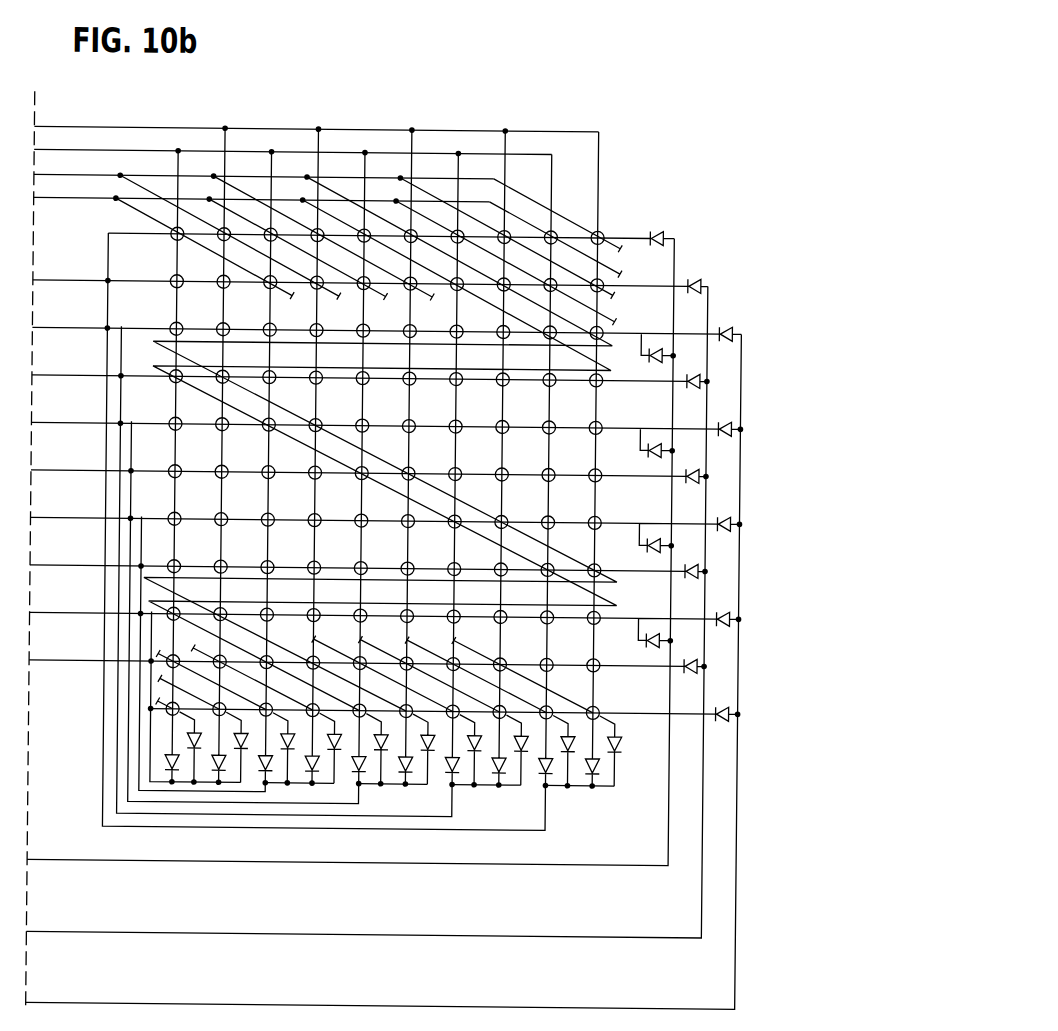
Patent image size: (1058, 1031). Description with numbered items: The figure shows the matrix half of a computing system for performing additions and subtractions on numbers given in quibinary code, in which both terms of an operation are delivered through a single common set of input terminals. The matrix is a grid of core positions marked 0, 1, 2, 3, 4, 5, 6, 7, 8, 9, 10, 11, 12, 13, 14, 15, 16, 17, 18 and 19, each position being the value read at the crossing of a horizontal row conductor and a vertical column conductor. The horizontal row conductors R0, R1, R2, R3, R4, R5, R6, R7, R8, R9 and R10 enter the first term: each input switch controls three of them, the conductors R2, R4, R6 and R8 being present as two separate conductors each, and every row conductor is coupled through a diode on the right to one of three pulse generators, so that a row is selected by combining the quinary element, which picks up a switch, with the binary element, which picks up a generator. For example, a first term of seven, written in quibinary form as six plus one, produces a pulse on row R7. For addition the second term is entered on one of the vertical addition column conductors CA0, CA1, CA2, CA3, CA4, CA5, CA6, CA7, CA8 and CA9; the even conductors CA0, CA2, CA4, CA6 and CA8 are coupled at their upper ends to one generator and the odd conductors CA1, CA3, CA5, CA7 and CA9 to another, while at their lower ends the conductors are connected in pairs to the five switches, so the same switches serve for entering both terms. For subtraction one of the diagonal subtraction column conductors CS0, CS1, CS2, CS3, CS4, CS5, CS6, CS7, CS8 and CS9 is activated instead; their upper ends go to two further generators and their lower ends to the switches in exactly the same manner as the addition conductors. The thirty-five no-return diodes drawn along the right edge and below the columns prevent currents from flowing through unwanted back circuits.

The matrix core position 0 is at (602, 232).
The matrix core position 1 is at (579, 255).
The matrix core position 2 is at (555, 279).
The matrix core position 3 is at (527, 302).
The matrix core position 4 is at (508, 326).
The matrix core position 5 is at (484, 350).
The matrix core position 6 is at (461, 372).
The matrix core position 7 is at (437, 396).
The matrix core position 8 is at (409, 419).
The matrix core position 9 is at (390, 443).
The matrix core position 10 is at (395, 490).
The matrix core position 11 is at (371, 515).
The matrix core position 12 is at (347, 544).
The matrix core position 13 is at (324, 562).
The matrix core position 14 is at (300, 585).
The matrix core position 15 is at (277, 609).
The matrix core position 16 is at (253, 632).
The matrix core position 17 is at (229, 661).
The matrix core position 18 is at (206, 679).
The matrix core position 19 is at (182, 703).
The addition column conductor CA0 is at (595, 142).
The addition column conductor CA1 is at (549, 165).
The addition column conductor CA2 is at (502, 142).
The addition column conductor CA3 is at (455, 165).
The addition column conductor CA4 is at (408, 142).
The addition column conductor CA5 is at (362, 165).
The addition column conductor CA6 is at (315, 142).
The addition column conductor CA7 is at (268, 165).
The addition column conductor CA8 is at (222, 142).
The addition column conductor CA9 is at (175, 165).
The subtraction column conductor CS0 is at (548, 230).
The subtraction column conductor CS1 is at (559, 242).
The subtraction column conductor CS2 is at (419, 189).
The subtraction column conductor CS3 is at (557, 292).
The subtraction column conductor CS4 is at (160, 344).
The subtraction column conductor CS5 is at (230, 368).
The subtraction column conductor CS6 is at (428, 300).
The subtraction column conductor CS7 is at (383, 300).
The subtraction column conductor CS8 is at (126, 183).
The subtraction column conductor CS9 is at (126, 208).
The row conductor R0 is at (628, 234).
The row conductor R1 is at (632, 284).
The row conductor R2 is at (631, 332).
The row conductor R3 is at (618, 382).
The row conductor R4 is at (630, 428).
The row conductor R5 is at (618, 477).
The row conductor R6 is at (630, 523).
The row conductor R7 is at (618, 572).
The row conductor R8 is at (630, 618).
The row conductor R9 is at (618, 667).
The row conductor R10 is at (628, 712).